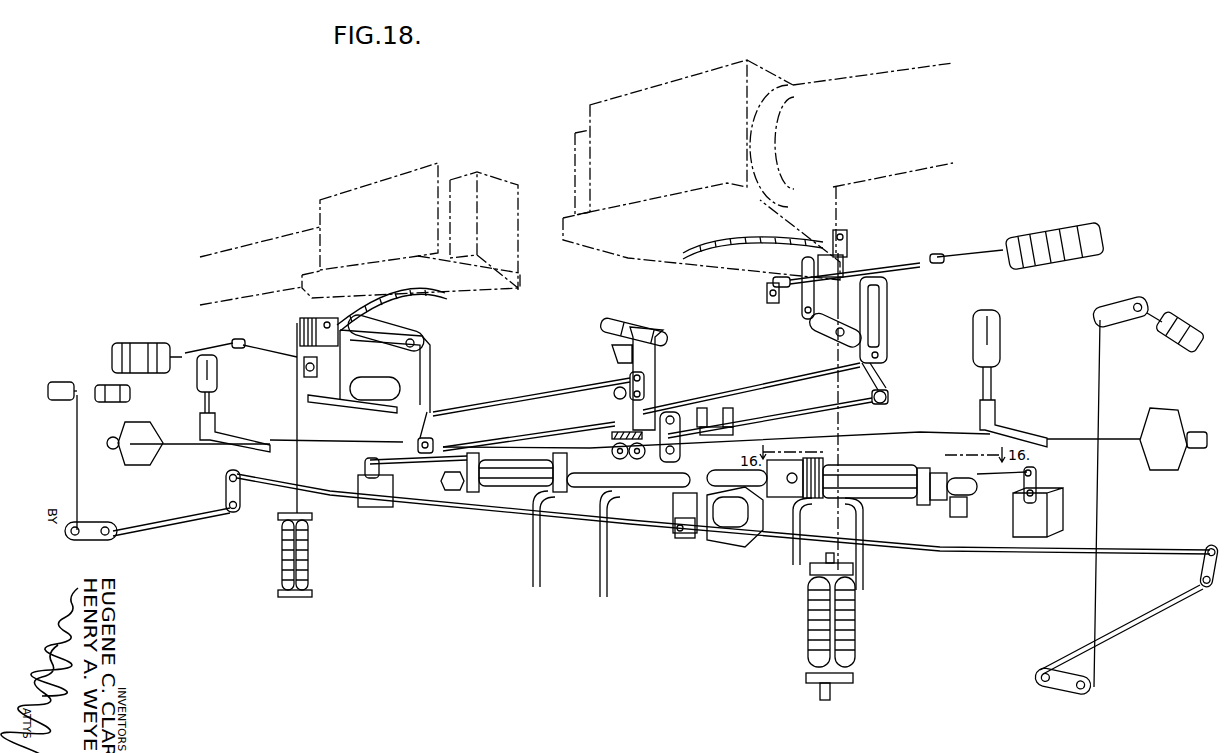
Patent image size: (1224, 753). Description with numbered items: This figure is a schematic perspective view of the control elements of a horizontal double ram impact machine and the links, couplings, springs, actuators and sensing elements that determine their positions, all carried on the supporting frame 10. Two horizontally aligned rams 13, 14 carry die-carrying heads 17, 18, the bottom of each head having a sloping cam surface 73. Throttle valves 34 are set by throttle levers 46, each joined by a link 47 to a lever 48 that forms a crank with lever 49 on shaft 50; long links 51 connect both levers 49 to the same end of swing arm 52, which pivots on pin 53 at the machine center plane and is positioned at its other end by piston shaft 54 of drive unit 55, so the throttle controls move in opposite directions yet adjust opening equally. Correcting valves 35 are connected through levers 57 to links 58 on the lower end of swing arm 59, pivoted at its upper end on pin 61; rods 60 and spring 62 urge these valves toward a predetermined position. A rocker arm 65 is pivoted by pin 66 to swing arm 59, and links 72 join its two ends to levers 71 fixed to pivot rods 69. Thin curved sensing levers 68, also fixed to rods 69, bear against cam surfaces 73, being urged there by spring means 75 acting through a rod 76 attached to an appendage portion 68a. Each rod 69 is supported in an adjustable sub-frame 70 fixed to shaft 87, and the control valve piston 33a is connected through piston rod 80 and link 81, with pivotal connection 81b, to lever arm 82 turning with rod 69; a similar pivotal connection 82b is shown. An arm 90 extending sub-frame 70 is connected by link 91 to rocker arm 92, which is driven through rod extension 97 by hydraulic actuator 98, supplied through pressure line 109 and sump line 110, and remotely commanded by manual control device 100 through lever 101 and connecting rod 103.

The supporting frame 10 is at (722, 543).
The movable ram 13 is at (243, 245).
The movable ram 14 is at (857, 83).
The die-carrying head 17 is at (383, 175).
The die-carrying head 18 is at (672, 77).
The piston 33a is at (138, 340).
The throttle valve 34 is at (137, 393).
The correcting valve 35 is at (222, 380).
The throttle lever 46 is at (70, 382).
The link 47 is at (77, 460).
The lever 48 is at (90, 530).
The lever 49 is at (230, 485).
The shaft 50 is at (167, 527).
The long link 51 is at (453, 507).
The swing arm 52 is at (680, 537).
The pin 53 is at (670, 507).
The piston shaft 54 is at (632, 465).
The drive unit 55 is at (507, 447).
The lever 57 is at (232, 428).
The link 58 is at (333, 438).
The swing arm 59 is at (635, 323).
The rod 60 is at (178, 447).
The pin 61 is at (607, 328).
The spring 62 is at (120, 442).
The rocker arm 65 is at (614, 407).
The pin 66 is at (627, 377).
The sensing lever 68 is at (420, 294).
The appendage portion 68a is at (310, 327).
The pivot rod 69 is at (405, 338).
The adjustable frame 70 is at (367, 380).
The lever 71 is at (427, 380).
The link 72 is at (500, 397).
The sloping cam surface 73 is at (472, 288).
The spring means 75 is at (297, 558).
The rod 76 is at (300, 465).
The piston rod 80 is at (182, 353).
The link 81 is at (252, 348).
The pivotal connection 81b is at (767, 287).
The lever arm 82 is at (328, 372).
The pin 82b is at (776, 290).
The shaft 87 is at (835, 337).
The arm 90 is at (433, 443).
The link 91 is at (527, 436).
The rocker arm 92 is at (690, 410).
The rod extension 97 is at (740, 470).
The hydraulic actuator 98 is at (863, 472).
The manual control device 100 is at (1053, 505).
The lever 101 is at (1037, 477).
The connecting rod 103 is at (980, 474).
The pressure line 109 is at (867, 580).
The sump line 110 is at (792, 565).